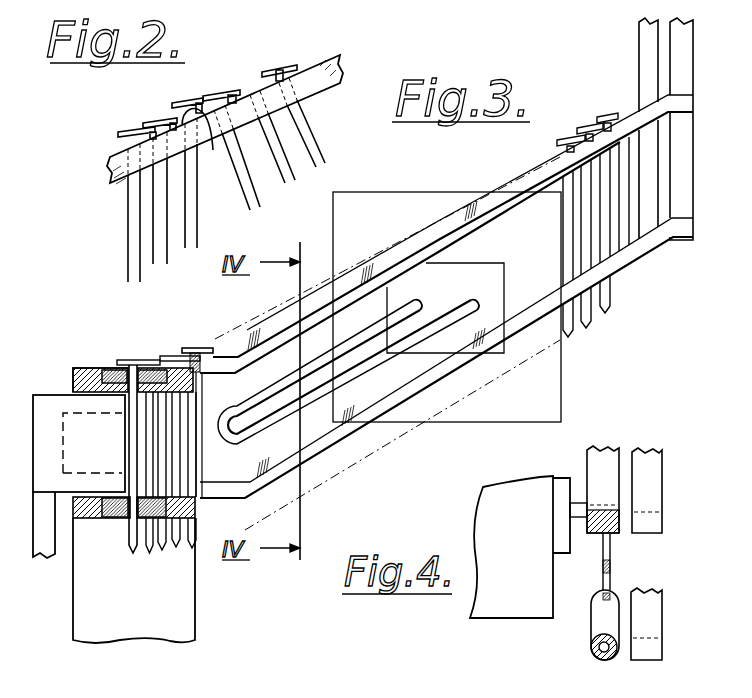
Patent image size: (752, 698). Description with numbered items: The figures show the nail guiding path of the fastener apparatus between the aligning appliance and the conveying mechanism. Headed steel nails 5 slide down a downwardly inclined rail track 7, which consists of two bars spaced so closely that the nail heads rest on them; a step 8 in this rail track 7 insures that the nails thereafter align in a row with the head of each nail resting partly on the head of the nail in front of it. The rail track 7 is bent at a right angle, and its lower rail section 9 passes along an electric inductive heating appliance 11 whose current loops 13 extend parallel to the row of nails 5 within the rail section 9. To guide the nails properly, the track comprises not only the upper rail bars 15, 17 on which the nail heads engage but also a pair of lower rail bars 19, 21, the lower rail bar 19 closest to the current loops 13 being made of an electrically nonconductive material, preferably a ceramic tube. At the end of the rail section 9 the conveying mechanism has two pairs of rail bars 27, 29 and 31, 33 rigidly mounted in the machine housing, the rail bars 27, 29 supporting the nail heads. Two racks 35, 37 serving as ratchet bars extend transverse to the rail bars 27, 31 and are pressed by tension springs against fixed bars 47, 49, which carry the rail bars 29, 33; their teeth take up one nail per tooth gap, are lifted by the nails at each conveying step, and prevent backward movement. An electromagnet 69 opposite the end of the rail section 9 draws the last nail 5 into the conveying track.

In FIG. 2, the nails 5 is at (158, 233).
In FIG. 3, the nails 5 is at (593, 213).
In FIG. 2, the rail track 7 is at (328, 60).
In FIG. 3, the rail track 7 is at (640, 42).
In FIG. 2, the step 8 is at (202, 149).
In FIG. 3, the lower rail section 9 is at (488, 188).
In FIG. 4, the lower rail section 9 is at (628, 442).
In FIG. 3, the electric inductive heating appliance 11 is at (409, 207).
In FIG. 4, the electric inductive heating appliance 11 is at (500, 503).
In FIG. 3, the current loops 13 is at (353, 377).
In FIG. 4, the current loops 13 is at (609, 593).
In FIG. 3, the upper rail bar 15 is at (533, 180).
In FIG. 4, the upper rail bar 15 is at (650, 460).
In FIG. 4, the upper rail bar 17 is at (603, 460).
In FIG. 4, the lower rail bar 19 is at (592, 647).
In FIG. 3, the lower rail bar 21 is at (527, 318).
In FIG. 4, the lower rail bar 21 is at (657, 647).
In FIG. 3, the rail bar 27 is at (108, 367).
In FIG. 3, the rail bar 29 is at (160, 360).
In FIG. 3, the rail bar 31 is at (120, 520).
In FIG. 3, the rail bar 33 is at (134, 504).
In FIG. 3, the rack 35 is at (85, 370).
In FIG. 3, the rack 37 is at (90, 508).
In FIG. 3, the bar 47 is at (213, 355).
In FIG. 3, the bar 49 is at (197, 511).
In FIG. 3, the electromagnet 69 is at (88, 423).